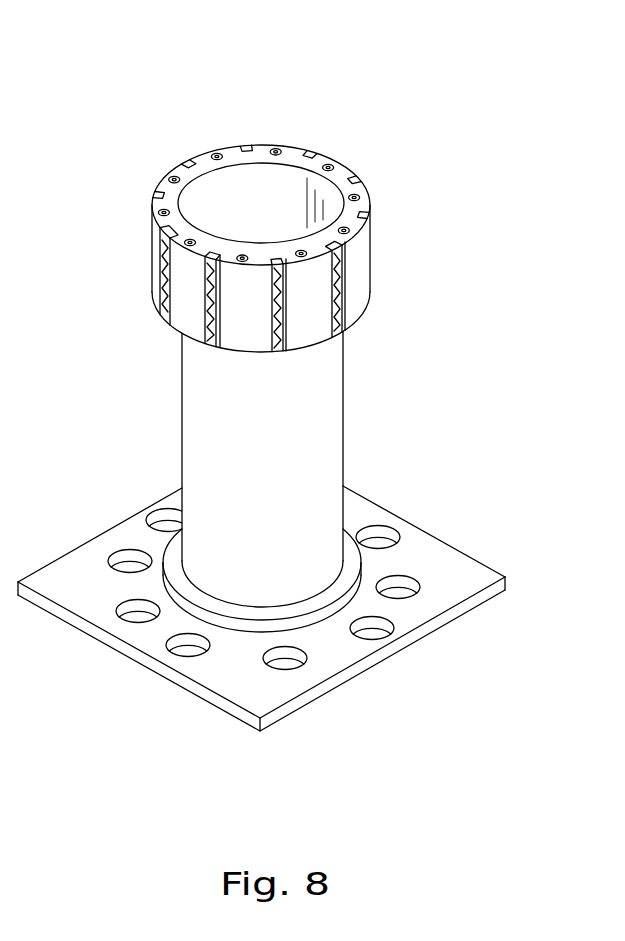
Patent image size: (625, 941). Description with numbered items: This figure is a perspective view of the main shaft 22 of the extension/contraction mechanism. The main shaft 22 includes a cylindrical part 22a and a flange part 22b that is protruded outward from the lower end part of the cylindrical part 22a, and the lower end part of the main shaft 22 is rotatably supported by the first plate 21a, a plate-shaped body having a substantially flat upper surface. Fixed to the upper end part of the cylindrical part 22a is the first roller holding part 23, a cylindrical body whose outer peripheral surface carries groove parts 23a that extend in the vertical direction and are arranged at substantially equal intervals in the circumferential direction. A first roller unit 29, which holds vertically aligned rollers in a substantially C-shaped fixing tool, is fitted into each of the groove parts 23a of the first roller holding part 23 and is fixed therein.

The first plate 21a is at (455, 593).
The main shaft 22 is at (344, 477).
The cylindrical part 22a is at (333, 447).
The flange part 22b is at (347, 570).
The first roller holding part 23 is at (271, 221).
The groove parts 23a is at (250, 148).
The first roller unit 29 is at (210, 326).